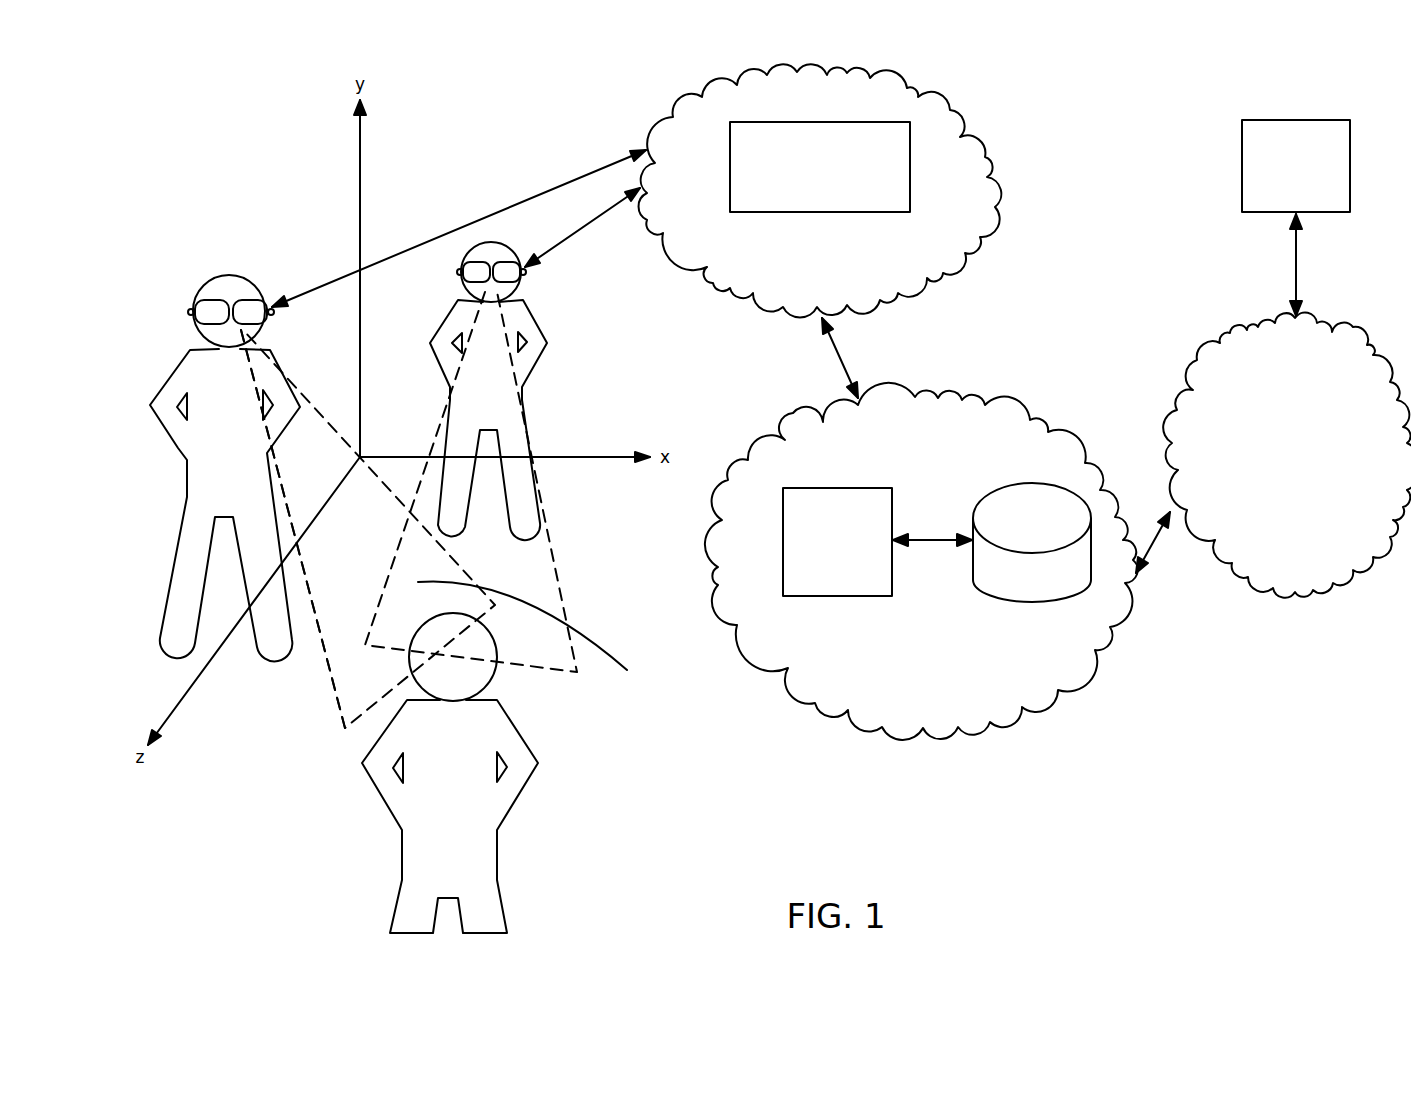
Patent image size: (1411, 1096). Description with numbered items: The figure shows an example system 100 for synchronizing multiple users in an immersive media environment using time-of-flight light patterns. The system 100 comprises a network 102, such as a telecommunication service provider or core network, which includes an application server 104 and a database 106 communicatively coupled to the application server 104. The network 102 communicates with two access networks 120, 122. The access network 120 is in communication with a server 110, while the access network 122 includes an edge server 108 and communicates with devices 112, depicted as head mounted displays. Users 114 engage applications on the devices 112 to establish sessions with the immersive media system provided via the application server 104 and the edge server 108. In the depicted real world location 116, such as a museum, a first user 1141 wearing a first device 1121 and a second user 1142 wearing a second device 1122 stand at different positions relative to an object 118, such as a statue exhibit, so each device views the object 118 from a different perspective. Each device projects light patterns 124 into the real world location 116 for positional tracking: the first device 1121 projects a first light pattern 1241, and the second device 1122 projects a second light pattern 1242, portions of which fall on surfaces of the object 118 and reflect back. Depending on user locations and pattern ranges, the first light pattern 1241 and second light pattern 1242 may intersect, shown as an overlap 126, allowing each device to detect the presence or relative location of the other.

The system 100 is at (176, 62).
The network 102 is at (909, 707).
The application server 104 is at (822, 570).
The database 106 is at (1016, 543).
The edge server 108 is at (804, 193).
The server 110 is at (1280, 192).
The devices 112 is at (363, 264).
The first device 1121 is at (208, 287).
The second device 1122 is at (517, 283).
The users 114 is at (360, 451).
The first user 1141 is at (182, 520).
The second user 1142 is at (530, 370).
The real world location 116 is at (239, 848).
The object 118 is at (533, 752).
The access network 120 is at (1280, 497).
The access network 122 is at (803, 284).
The light patterns 124 is at (446, 525).
The first light pattern 1241 is at (340, 715).
The second light pattern 1242 is at (557, 557).
The overlap 126 is at (536, 639).